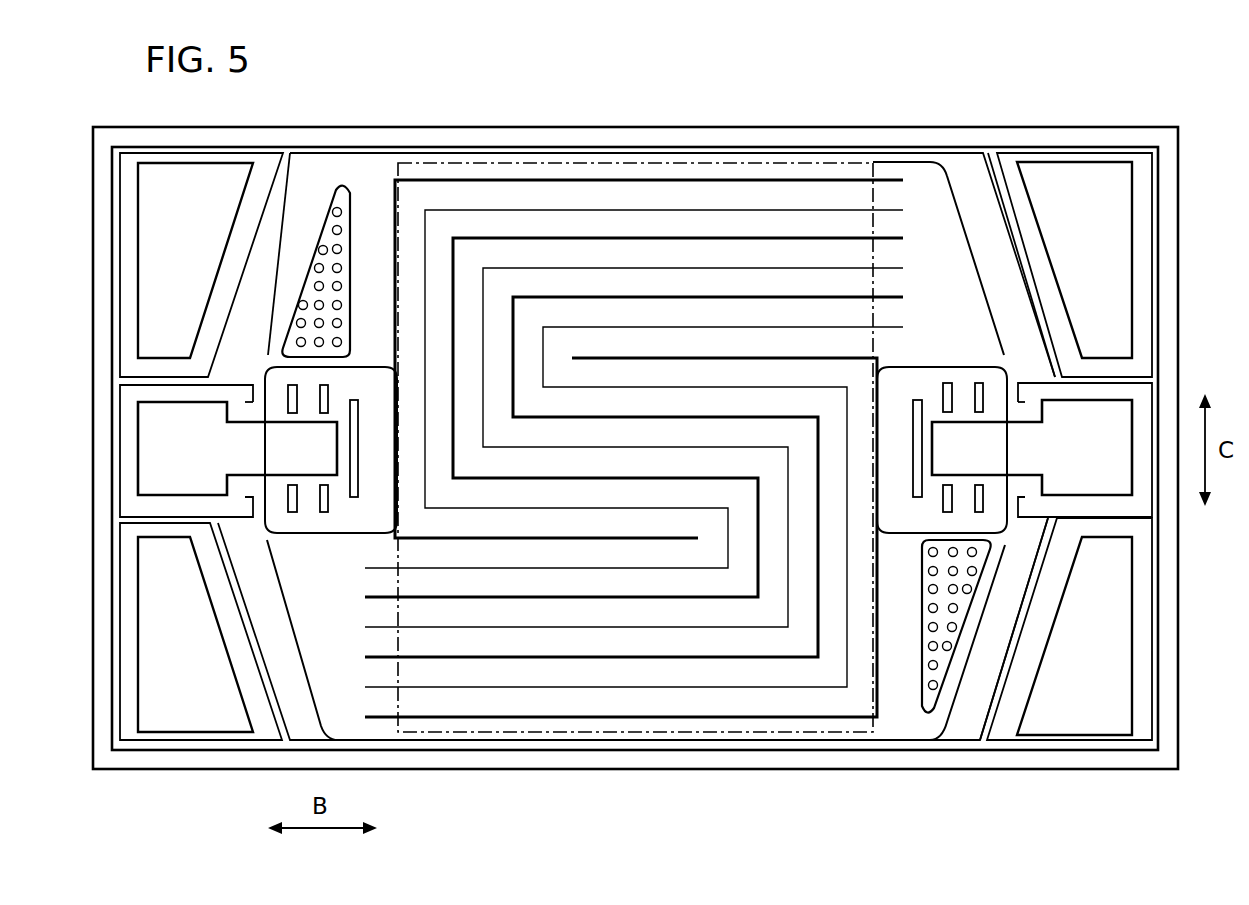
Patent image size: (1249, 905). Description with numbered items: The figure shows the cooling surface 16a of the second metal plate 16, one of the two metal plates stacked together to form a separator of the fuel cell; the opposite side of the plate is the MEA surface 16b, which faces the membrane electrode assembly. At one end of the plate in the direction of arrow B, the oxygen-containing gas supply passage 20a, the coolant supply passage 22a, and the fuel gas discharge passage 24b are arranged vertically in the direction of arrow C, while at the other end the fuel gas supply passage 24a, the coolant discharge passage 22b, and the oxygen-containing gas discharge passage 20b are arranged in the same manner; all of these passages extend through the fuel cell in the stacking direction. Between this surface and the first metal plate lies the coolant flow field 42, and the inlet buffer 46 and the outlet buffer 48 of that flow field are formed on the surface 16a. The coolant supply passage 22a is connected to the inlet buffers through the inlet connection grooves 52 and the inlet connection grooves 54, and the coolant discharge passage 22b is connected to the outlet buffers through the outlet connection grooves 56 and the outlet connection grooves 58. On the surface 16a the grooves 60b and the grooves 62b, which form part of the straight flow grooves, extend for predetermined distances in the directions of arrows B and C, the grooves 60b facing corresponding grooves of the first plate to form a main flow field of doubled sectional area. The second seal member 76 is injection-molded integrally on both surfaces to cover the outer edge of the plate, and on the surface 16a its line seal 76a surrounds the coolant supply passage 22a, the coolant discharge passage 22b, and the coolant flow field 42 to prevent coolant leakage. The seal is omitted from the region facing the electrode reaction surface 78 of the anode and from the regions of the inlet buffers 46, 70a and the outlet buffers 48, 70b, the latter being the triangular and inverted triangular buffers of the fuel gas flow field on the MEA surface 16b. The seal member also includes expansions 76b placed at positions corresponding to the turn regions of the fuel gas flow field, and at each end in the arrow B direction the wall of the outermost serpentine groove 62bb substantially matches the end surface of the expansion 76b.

The second metal plate 16 is at (827, 84).
The surface (cooling surface) of the second metal plate 16a is at (547, 758).
The surface (MEA surface) of the second metal plate 16b is at (845, 758).
The oxygen-containing gas supply passage 20a is at (201, 265).
The oxygen-containing gas discharge passage 20b is at (1066, 629).
The coolant supply passage 22a is at (228, 451).
The coolant discharge passage 22b is at (1042, 450).
The fuel gas supply passage 24a is at (1070, 265).
The fuel gas discharge passage 24b is at (201, 631).
The coolant flow field 42 is at (634, 399).
The inlet buffer 46 is at (343, 186).
The outlet buffer 48 is at (927, 706).
The inlet connection grooves 52 is at (305, 495).
The inlet connection grooves 54 is at (305, 400).
The outlet connection grooves 56 is at (965, 497).
The outlet connection grooves 58 is at (965, 400).
The grooves 60b is at (572, 237).
The grooves 62b is at (455, 438).
The outermost serpentine groove 62bb is at (397, 498).
The inlet buffer 70a is at (998, 332).
The outlet buffer 70b is at (274, 562).
The second seal member 76 is at (825, 147).
The line seal 76a is at (420, 153).
The expansions 76b is at (367, 450).
The electrode reaction surface 78 is at (466, 738).